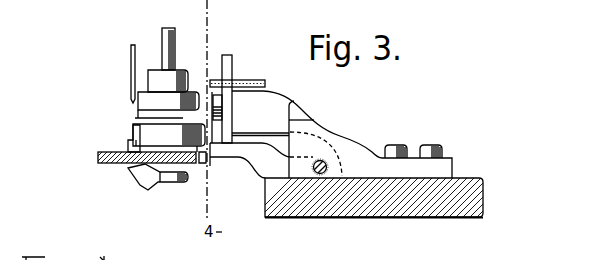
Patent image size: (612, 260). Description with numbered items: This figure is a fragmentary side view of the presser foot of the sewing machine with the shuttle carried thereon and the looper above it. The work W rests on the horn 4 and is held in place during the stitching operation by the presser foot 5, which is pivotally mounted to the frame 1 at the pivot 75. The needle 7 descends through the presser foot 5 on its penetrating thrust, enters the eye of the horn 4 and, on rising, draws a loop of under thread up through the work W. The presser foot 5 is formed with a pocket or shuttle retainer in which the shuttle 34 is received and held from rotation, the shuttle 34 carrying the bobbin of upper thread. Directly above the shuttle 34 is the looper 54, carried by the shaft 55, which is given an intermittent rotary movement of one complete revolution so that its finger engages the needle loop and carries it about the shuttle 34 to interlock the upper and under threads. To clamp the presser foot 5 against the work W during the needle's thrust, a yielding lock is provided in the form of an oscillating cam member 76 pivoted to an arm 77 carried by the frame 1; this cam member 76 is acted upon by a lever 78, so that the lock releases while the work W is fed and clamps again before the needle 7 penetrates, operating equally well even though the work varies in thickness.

The frame 1 is at (484, 198).
The horn 4 is at (142, 177).
The presser foot 5 is at (197, 152).
The needle 7 is at (130, 58).
The shuttle 34 is at (148, 121).
The looper 54 is at (152, 103).
The shaft 55 is at (168, 27).
The pivot 75 is at (320, 174).
The oscillating cam member 76 is at (220, 93).
The arm 77 is at (268, 98).
The lever 78 is at (252, 80).
The work W is at (115, 152).